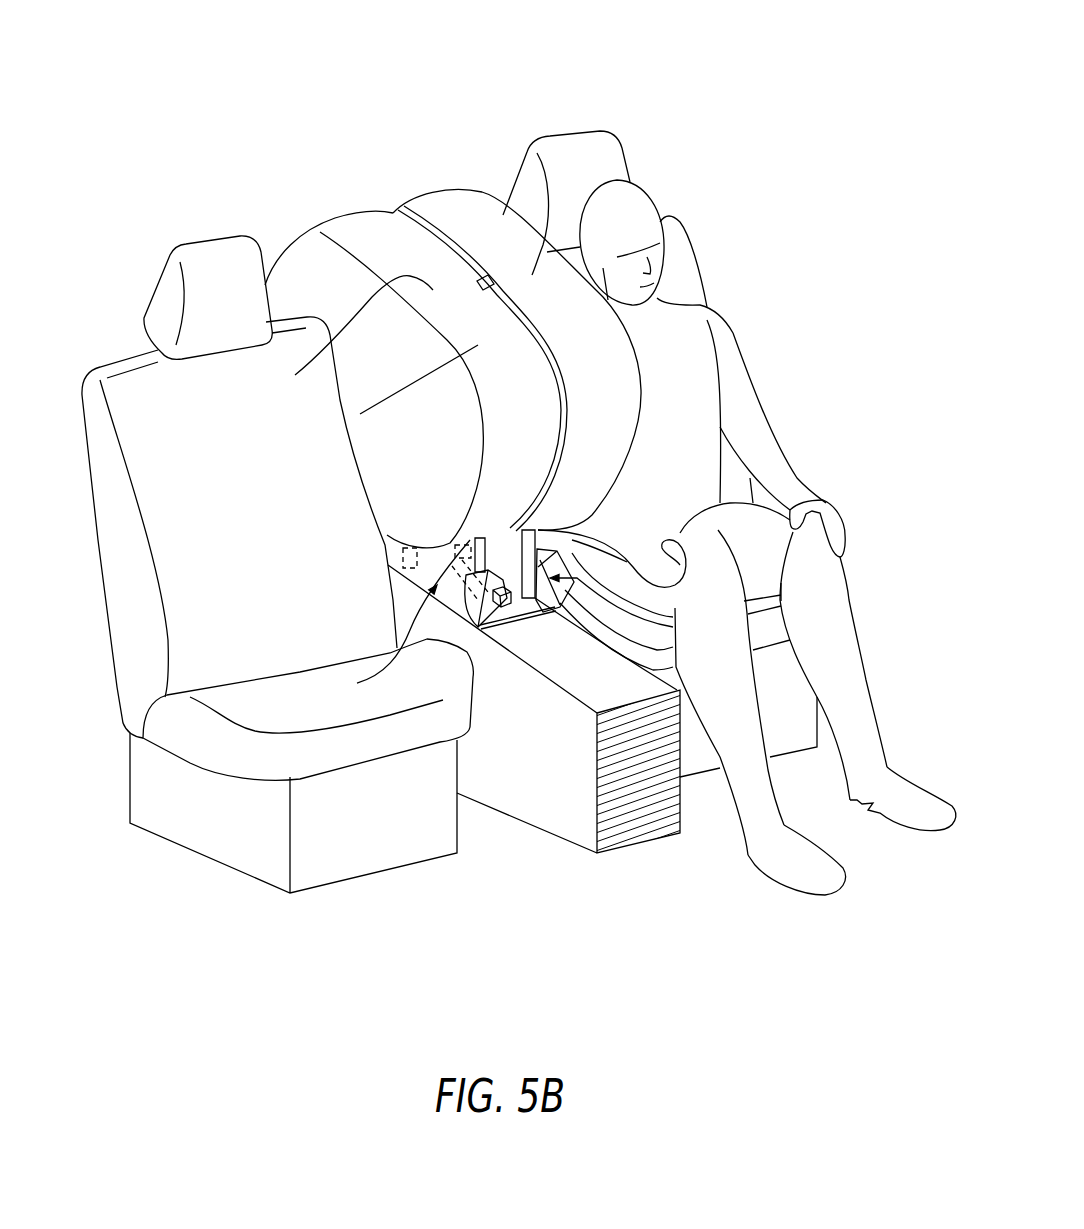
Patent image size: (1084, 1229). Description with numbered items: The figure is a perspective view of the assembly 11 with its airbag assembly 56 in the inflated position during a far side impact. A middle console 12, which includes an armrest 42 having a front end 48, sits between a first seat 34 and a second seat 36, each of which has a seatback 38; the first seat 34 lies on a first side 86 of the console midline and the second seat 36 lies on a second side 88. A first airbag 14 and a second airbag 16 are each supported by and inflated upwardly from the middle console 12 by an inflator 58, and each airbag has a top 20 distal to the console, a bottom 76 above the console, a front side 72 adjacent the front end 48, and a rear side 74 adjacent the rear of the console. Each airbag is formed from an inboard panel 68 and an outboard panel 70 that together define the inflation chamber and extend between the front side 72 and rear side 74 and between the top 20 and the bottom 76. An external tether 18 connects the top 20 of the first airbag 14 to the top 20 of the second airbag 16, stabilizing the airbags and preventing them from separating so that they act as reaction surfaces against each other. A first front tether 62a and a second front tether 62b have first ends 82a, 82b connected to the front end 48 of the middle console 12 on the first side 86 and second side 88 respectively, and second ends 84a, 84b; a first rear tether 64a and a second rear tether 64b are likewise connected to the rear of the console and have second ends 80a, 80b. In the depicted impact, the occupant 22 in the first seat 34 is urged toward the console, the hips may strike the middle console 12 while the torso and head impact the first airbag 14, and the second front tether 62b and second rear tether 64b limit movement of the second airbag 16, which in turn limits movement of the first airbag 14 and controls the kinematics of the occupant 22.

The assembly 11 is at (298, 75).
The middle console 12 is at (622, 890).
The first airbag 14 is at (466, 202).
The second airbag 16 is at (367, 233).
The tether 18 is at (360, 414).
The top 20 is at (296, 374).
The occupant 22 is at (733, 333).
The first seat 34 is at (627, 150).
The second seat 36 is at (157, 290).
The seatback 38 is at (80, 397).
The armrest 42 is at (467, 652).
The front end 48 is at (557, 647).
The airbag assembly 56 is at (440, 166).
The inflator 58 is at (503, 607).
The first front tether 62a is at (522, 553).
The second front tether 62b is at (524, 600).
The first rear tether 64a is at (455, 545).
The second rear tether 64b is at (403, 550).
The inboard panel 68 is at (550, 367).
The outboard panel 70 is at (400, 460).
The front side 72 is at (520, 449).
The rear side 74 is at (280, 223).
The bottom 76 is at (397, 605).
The second end of first rear tether 80a is at (462, 533).
The second end of second rear tether 80b is at (403, 576).
The first end of first front tether 82a is at (673, 647).
The first end of second front tether 82b is at (476, 630).
The second end of first front tether 84a is at (627, 562).
The second end of second front tether 84b is at (466, 578).
The first side 86 is at (673, 617).
The second side 88 is at (399, 620).